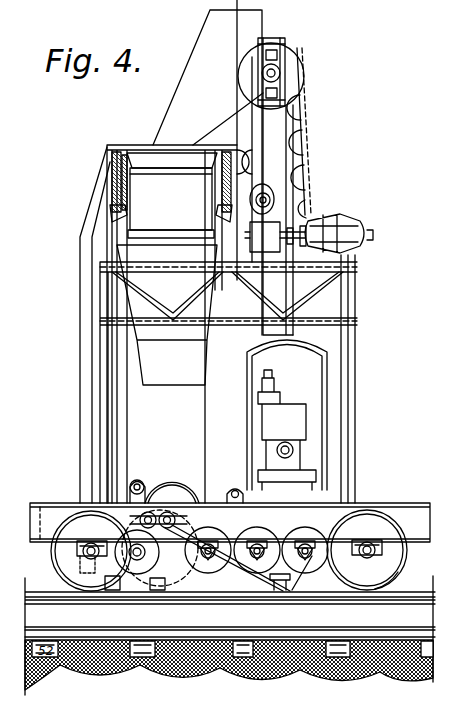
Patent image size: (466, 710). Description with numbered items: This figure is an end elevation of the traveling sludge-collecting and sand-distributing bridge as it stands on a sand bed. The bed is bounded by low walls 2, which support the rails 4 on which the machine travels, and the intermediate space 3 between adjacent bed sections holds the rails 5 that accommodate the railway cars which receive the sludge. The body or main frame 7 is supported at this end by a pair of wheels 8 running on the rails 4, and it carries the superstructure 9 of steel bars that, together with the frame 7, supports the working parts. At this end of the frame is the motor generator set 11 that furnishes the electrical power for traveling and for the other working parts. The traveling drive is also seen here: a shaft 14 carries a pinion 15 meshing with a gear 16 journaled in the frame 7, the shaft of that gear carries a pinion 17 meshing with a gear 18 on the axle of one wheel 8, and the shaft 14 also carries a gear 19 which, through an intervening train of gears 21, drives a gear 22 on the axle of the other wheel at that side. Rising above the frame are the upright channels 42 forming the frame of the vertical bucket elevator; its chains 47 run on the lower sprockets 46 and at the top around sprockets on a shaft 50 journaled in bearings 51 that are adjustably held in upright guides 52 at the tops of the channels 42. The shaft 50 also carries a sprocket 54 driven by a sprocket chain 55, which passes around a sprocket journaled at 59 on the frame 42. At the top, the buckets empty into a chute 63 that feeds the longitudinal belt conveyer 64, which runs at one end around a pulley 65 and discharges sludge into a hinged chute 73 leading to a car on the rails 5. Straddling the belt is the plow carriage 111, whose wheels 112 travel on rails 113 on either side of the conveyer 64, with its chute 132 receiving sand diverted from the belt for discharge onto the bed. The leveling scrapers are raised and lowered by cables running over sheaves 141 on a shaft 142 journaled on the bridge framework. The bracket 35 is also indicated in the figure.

The low walls 2 is at (226, 600).
The intermediate space 3 is at (240, 668).
The rails 4 is at (306, 597).
The rails 5 is at (385, 627).
The body or main frame 7 is at (404, 506).
The wheels 8 is at (62, 557).
The superstructure 9 is at (356, 300).
The motor generator set 11 is at (260, 410).
The shaft 14 is at (176, 519).
The pinion 15 is at (172, 560).
The gear 16 is at (158, 590).
The pinion 17 is at (141, 558).
The gear 18 is at (115, 590).
The gear 19 is at (218, 535).
The train of gears 21 is at (283, 538).
The gear 22 is at (405, 580).
The bracket 35 is at (233, 489).
The upright channels 42 is at (283, 152).
The sprockets 46 is at (305, 116).
The chains 47 is at (297, 135).
The shaft 50 is at (281, 70).
The bearings 51 is at (282, 77).
The upright guides 52 is at (284, 42).
The sprocket 54 is at (298, 50).
The sprocket chain 55 is at (306, 95).
The journal 59 is at (268, 197).
The chute 63 is at (207, 26).
The belt conveyer 64 is at (186, 170).
The pulley 65 is at (108, 208).
The chute 73 is at (186, 343).
The carriage 111 is at (127, 145).
The wheels 112 is at (111, 158).
The rails 113 is at (108, 198).
The chute 132 is at (79, 242).
The sheaves 141 is at (132, 481).
The shaft 142 is at (129, 487).